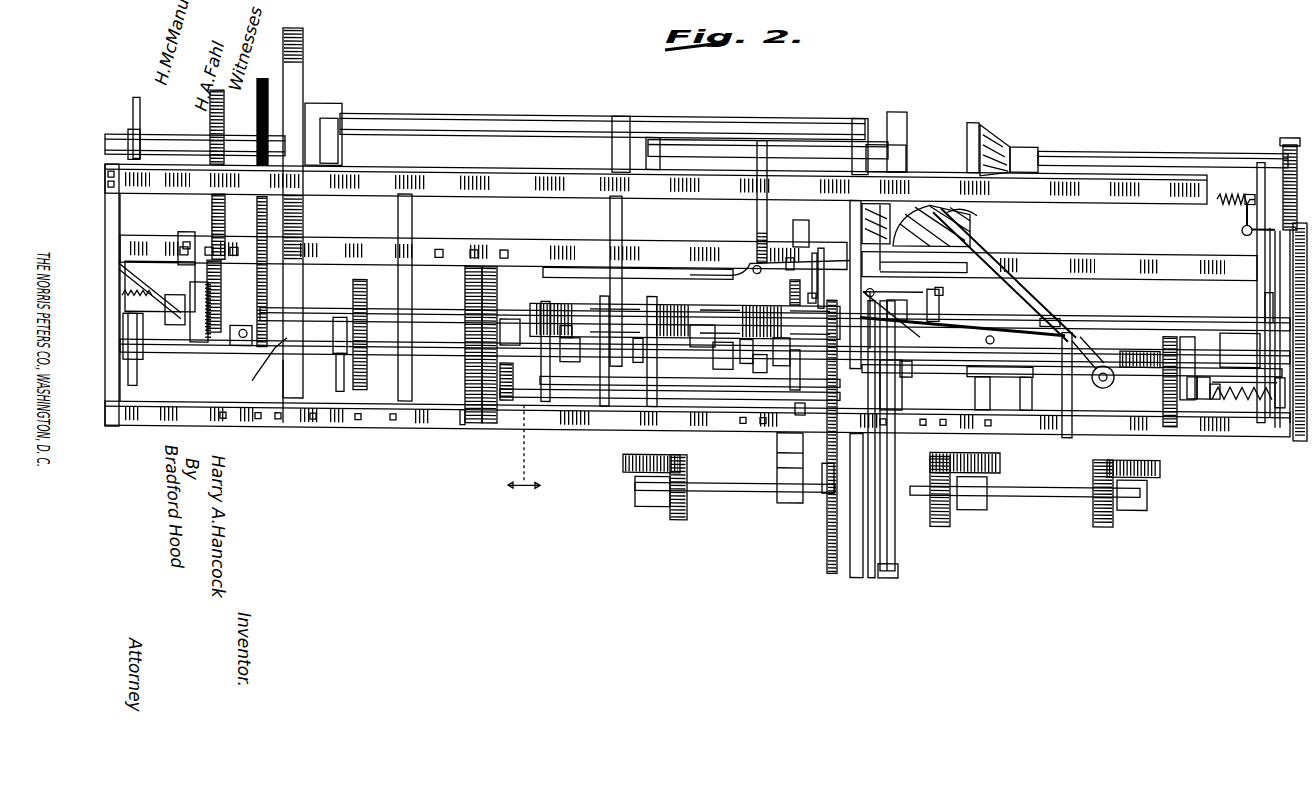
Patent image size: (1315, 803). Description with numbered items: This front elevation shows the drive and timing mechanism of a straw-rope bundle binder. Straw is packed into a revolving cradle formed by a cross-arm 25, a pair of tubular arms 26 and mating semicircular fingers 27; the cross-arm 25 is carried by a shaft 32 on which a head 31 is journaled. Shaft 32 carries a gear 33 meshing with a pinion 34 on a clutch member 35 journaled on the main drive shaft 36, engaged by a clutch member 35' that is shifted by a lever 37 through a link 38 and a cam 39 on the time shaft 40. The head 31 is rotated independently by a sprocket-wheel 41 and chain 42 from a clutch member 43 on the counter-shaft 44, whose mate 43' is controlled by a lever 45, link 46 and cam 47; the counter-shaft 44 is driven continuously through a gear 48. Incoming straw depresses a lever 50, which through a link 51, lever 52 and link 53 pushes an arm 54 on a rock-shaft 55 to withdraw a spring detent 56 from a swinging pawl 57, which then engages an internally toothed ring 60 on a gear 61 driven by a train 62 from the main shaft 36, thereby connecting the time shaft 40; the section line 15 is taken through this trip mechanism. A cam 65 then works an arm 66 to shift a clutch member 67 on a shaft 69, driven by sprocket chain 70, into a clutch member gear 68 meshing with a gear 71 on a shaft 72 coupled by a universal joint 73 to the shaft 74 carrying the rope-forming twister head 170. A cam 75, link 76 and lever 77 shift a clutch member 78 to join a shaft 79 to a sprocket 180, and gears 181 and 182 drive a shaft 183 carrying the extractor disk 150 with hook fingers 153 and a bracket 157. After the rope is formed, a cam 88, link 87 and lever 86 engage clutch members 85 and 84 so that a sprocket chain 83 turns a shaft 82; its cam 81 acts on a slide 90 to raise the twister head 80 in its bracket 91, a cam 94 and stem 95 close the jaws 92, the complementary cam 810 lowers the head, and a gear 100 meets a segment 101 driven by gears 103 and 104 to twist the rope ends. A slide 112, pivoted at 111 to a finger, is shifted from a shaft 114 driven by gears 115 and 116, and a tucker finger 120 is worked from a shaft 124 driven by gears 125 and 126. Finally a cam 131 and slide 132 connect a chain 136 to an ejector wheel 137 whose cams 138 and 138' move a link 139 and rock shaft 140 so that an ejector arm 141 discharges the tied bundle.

The section line 15 is at (524, 453).
The cross-arm 25 is at (325, 105).
The tubular arms 26 is at (535, 112).
The semicircular fingers 27 is at (868, 156).
The head 31 is at (300, 60).
The shaft 32 is at (173, 134).
The gear 33 is at (212, 130).
The pinion 34 is at (222, 298).
The clutch member 35 is at (202, 338).
The clutch member 35' is at (157, 332).
The main drive shaft 36 is at (318, 306).
The lever 37 is at (140, 330).
The link 38 is at (150, 290).
The cam 39 is at (137, 370).
The time shaft 40 is at (323, 351).
The sprocket-wheel 41 is at (257, 92).
The chain 42 is at (257, 200).
The clutch member 43 is at (269, 369).
The clutch member 43' is at (283, 403).
The counter-shaft 44 is at (236, 343).
The lever 45 is at (355, 300).
The link 46 is at (345, 352).
The cam 47 is at (339, 388).
The gear 48 is at (365, 275).
The lever 50 is at (797, 212).
The link 51 is at (789, 250).
The lever 52 is at (790, 281).
The link 53 is at (795, 382).
The arm 54 is at (800, 407).
The rock-shaft 55 is at (723, 362).
The spring detent 56 is at (506, 398).
The swinging pawl 57 is at (512, 314).
The internally toothed ring 60 is at (465, 375).
The gear 61 is at (490, 420).
The train 62 is at (465, 410).
The cam 65 is at (1215, 387).
The arm 66 is at (1192, 387).
The clutch member 67 is at (1203, 387).
The clutch member gear 68 is at (1188, 325).
The shaft 69 is at (1255, 388).
The sprocket chain 70 is at (1293, 296).
The gear 71 is at (1170, 325).
The shaft 72 is at (1240, 350).
The universal joint 73 is at (1068, 428).
The shaft 74 is at (1052, 308).
The cam 75 is at (1280, 395).
The link 76 is at (1265, 284).
The lever 77 is at (1244, 210).
The clutch member 78 is at (1240, 186).
The shaft 79 is at (1283, 125).
The twister head 80 is at (935, 314).
The cam 81 is at (871, 520).
The shaft 82 is at (740, 484).
The sprocket chain 83 is at (826, 470).
The clutch member 84 is at (821, 240).
The clutch member 85 is at (814, 245).
The lever 86 is at (808, 287).
The link 87 is at (762, 365).
The cam 88 is at (777, 435).
The slide 90 is at (856, 570).
The bracket 91 is at (943, 280).
The pivoted jaws 92 is at (905, 255).
The cam 94 is at (897, 520).
The stem 95 is at (890, 569).
The gear 100 is at (903, 365).
The segment 101 is at (1015, 368).
The gear 103 is at (1000, 456).
The gear 104 is at (948, 512).
The pivot 111 is at (752, 256).
The operating slide 112 is at (593, 262).
The shaft 114 is at (655, 390).
The gear 115 is at (680, 452).
The gear 116 is at (678, 513).
The tucker finger 120 is at (940, 296).
The shaft 124 is at (1104, 378).
The gear 125 is at (1155, 460).
The gear 126 is at (1105, 516).
The cam 131 is at (546, 398).
The slide 132 is at (549, 335).
The chain 136 is at (688, 338).
The ejector wheel 137 is at (660, 365).
The cam 138 is at (584, 384).
The cam 138' is at (617, 395).
The link 139 is at (623, 205).
The rock shaft 140 is at (720, 140).
The ejector arm 141 is at (757, 207).
The disk 150 is at (982, 118).
The hook-shaped finger 153 is at (973, 113).
The bracket 157 is at (1035, 138).
The twister head 170 is at (985, 235).
The sprocket 180 is at (1258, 175).
The gear 181 is at (1268, 232).
The gear 182 is at (1290, 132).
The shaft 183 is at (1105, 142).
The cam 810 is at (833, 555).